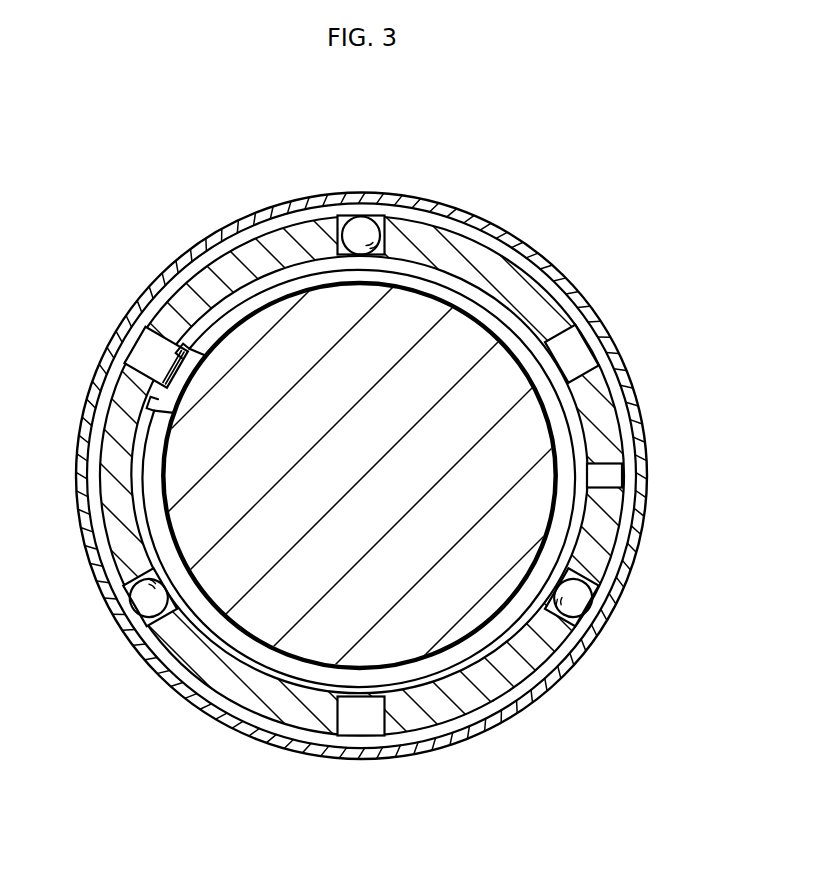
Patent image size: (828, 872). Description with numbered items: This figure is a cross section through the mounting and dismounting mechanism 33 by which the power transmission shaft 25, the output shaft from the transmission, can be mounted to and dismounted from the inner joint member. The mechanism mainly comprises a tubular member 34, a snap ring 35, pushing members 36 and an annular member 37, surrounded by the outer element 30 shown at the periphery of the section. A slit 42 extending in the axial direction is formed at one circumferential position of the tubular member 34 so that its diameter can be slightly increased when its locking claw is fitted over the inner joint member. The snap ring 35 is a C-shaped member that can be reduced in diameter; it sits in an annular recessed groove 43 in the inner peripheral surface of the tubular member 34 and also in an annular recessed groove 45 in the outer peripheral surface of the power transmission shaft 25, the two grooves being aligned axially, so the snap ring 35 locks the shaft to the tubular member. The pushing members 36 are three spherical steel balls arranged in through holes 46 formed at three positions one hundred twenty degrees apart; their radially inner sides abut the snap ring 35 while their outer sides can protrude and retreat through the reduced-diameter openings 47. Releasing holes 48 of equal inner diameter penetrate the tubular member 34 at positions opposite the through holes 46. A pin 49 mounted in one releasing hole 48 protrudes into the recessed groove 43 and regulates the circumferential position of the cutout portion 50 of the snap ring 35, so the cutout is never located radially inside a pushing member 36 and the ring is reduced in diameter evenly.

The power transmission shaft 25 is at (266, 606).
The housing 30 is at (636, 430).
The mounting and dismounting mechanism 33 is at (327, 216).
The tubular member 34 is at (233, 258).
The snap ring 35 is at (455, 272).
The pushing members 36 is at (366, 228).
The annular member 37 is at (298, 743).
The slit 42 is at (607, 478).
The recessed groove 43 is at (489, 690).
The recessed groove 45 is at (548, 405).
The through holes 46 is at (367, 258).
The openings 47 is at (350, 222).
The releasing holes 48 is at (590, 360).
The pin 49 is at (161, 348).
The cutout portion 50 is at (199, 358).